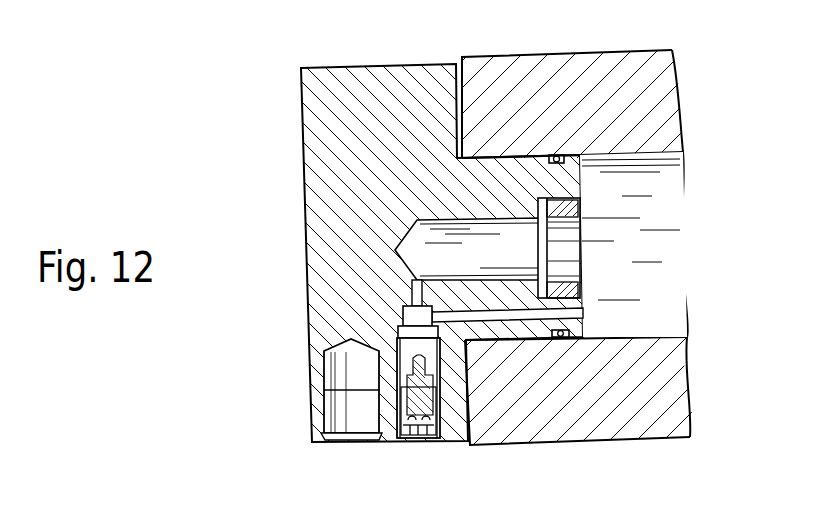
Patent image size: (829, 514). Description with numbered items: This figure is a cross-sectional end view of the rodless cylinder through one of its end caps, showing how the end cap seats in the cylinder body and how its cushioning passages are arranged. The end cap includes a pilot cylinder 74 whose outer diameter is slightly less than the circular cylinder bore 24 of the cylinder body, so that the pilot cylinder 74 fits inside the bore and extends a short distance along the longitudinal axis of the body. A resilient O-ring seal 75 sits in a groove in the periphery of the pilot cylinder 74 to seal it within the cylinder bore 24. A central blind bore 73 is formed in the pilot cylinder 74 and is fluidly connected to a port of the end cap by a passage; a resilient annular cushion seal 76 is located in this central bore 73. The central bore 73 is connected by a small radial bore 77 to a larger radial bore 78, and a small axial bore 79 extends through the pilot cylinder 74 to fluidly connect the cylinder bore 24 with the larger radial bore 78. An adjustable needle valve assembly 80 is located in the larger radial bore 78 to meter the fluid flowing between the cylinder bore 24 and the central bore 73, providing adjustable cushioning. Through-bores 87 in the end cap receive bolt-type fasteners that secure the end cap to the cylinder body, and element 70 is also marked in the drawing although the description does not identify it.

The cylinder bore 24 is at (640, 255).
The plug 70 is at (342, 403).
The central blind bore 73 is at (433, 240).
The pilot cylinder 74 is at (516, 167).
The O-ring seal 75 is at (560, 158).
The annular cushion seal 76 is at (563, 214).
The small radial bore 77 is at (420, 297).
The larger radial bore 78 is at (410, 313).
The small axial bore 79 is at (580, 313).
The adjustable needle valve assembly 80 is at (437, 433).
The through-bores 87 is at (193, 501).